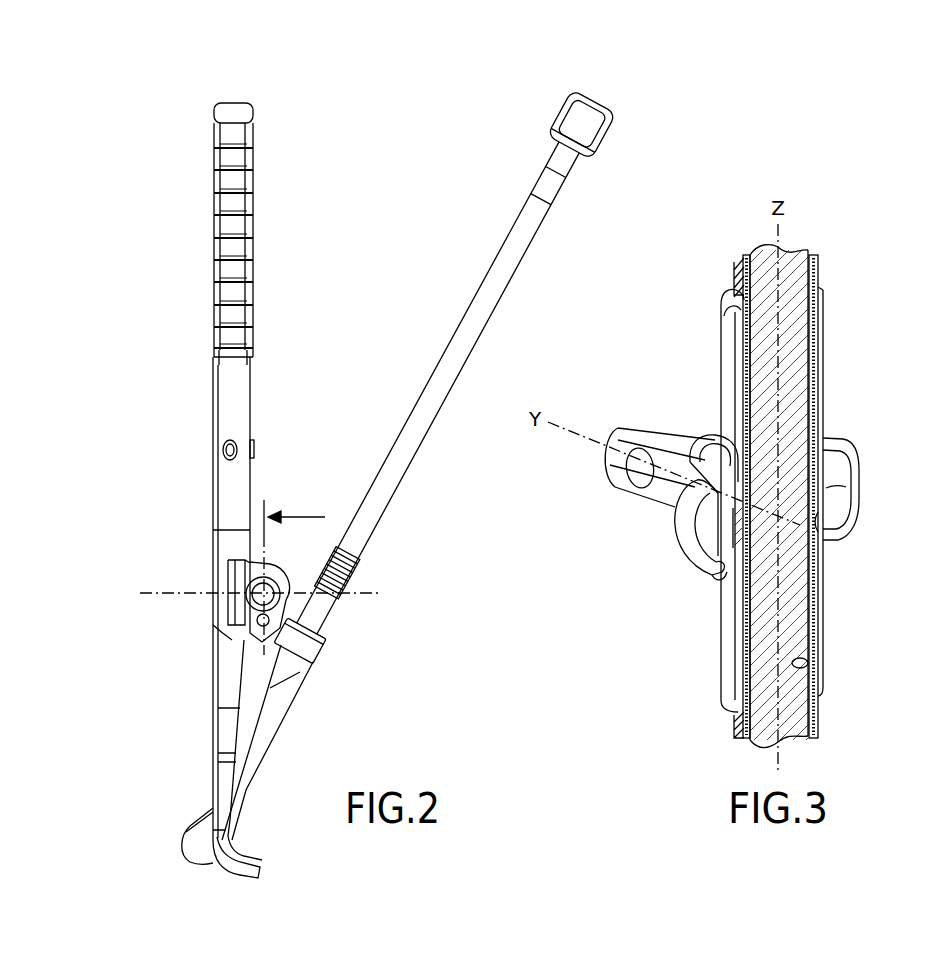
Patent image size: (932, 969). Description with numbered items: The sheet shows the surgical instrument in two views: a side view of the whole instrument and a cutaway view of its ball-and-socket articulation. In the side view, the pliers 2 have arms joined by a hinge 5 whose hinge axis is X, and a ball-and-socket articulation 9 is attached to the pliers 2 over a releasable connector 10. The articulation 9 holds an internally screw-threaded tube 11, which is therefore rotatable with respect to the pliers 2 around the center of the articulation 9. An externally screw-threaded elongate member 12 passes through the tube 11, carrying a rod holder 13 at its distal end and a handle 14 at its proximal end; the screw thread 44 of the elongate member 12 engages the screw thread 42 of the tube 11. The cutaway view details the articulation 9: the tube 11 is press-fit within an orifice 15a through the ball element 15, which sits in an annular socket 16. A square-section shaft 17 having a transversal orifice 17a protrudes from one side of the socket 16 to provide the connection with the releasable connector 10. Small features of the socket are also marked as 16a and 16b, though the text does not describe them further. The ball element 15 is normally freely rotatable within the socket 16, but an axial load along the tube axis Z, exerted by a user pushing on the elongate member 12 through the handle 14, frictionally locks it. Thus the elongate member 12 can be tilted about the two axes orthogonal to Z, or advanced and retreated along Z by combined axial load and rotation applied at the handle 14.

In FIG. 2, the pliers 2 is at (198, 641).
In FIG. 2, the hinge 5 is at (210, 583).
In FIG. 2, the ball-and-socket articulation 9 is at (322, 648).
In FIG. 3, the ball-and-socket articulation 9 is at (652, 586).
In FIG. 2, the releasable connector 10 is at (276, 600).
In FIG. 2, the internally screw-threaded tube 11 is at (290, 681).
In FIG. 3, the internally screw-threaded tube 11 is at (816, 354).
In FIG. 2, the externally screw-threaded elongate member 12 is at (405, 456).
In FIG. 3, the externally screw-threaded elongate member 12 is at (805, 714).
In FIG. 2, the rod holder 13 is at (196, 847).
In FIG. 2, the handle 14 is at (578, 130).
In FIG. 3, the ball element 15 is at (846, 487).
In FIG. 3, the orifice 15a is at (824, 522).
In FIG. 3, the annular socket 16 is at (680, 541).
In FIG. 3, the ring hook 16a is at (712, 443).
In FIG. 3, the ring lower portion 16b is at (720, 586).
In FIG. 3, the square-section shaft 17 is at (650, 427).
In FIG. 3, the transversal orifice 17a is at (630, 470).
In FIG. 3, the screw thread 42 is at (802, 665).
In FIG. 2, the screw thread 44 is at (345, 576).
In FIG. 3, the screw thread 44 is at (812, 605).